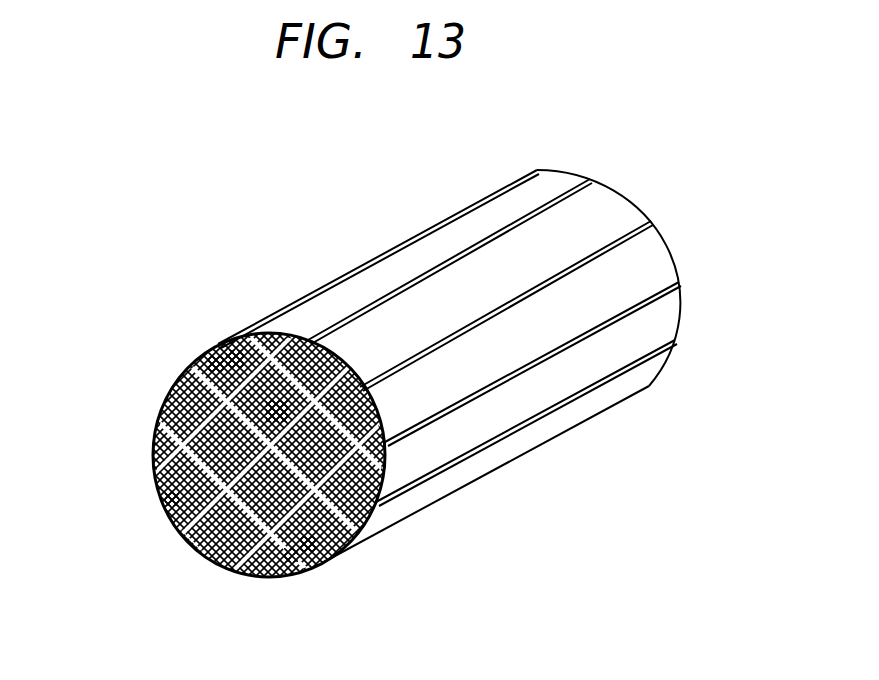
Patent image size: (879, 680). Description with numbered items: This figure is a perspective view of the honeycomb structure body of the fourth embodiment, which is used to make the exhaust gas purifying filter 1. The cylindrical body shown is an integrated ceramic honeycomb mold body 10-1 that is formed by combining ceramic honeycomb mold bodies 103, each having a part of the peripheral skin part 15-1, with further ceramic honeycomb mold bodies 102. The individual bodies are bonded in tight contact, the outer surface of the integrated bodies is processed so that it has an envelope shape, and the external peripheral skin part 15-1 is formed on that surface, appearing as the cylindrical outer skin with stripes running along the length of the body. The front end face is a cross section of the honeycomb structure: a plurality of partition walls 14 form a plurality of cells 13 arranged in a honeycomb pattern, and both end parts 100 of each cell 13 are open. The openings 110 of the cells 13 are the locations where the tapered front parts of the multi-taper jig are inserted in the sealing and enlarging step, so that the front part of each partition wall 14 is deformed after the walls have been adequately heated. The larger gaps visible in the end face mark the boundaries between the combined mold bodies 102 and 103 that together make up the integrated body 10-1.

The exhaust gas purifying filter 1 is at (630, 168).
The integrated ceramic honeycomb mold body 10-1 is at (420, 196).
The end parts 100 is at (216, 534).
The ceramic honeycomb mold bodies 102 is at (308, 420).
The ceramic honeycomb mold bodies having a part of the peripheral skin part 103 is at (326, 546).
The openings 110 is at (160, 455).
The cells 13 is at (236, 358).
The partition walls 14 is at (205, 349).
The external peripheral skin part 15-1 is at (530, 397).